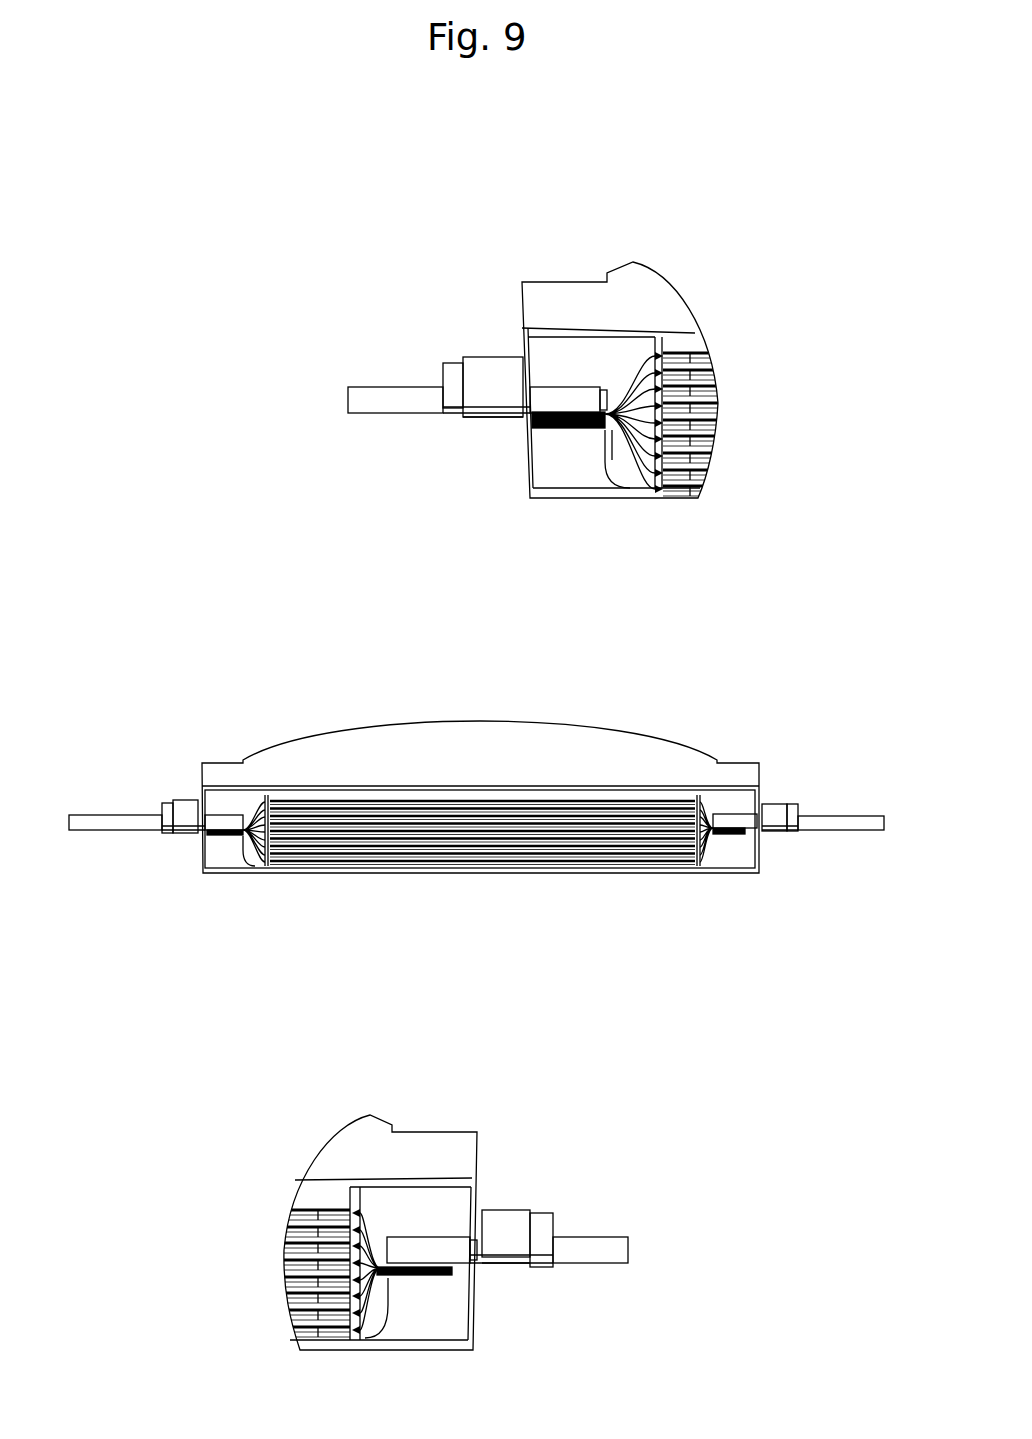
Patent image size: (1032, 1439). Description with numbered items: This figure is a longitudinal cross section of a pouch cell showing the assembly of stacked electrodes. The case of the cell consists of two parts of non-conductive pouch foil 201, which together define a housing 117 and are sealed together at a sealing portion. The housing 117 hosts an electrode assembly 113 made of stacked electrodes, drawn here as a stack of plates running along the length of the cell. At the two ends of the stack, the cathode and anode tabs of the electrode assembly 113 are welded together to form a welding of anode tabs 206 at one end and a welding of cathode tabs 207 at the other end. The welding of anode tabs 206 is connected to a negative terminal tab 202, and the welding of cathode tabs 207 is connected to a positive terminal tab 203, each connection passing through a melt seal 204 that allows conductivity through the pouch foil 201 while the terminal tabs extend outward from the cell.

The pouch foil 201 is at (418, 757).
The negative terminal tab 202 is at (845, 818).
The positive terminal tab 203 is at (413, 397).
The melt seal 204 is at (453, 372).
The welding of anode tabs 206 is at (730, 820).
The welding of cathode tabs 207 is at (570, 397).
The electrode assembly 113 is at (625, 833).
The housing 117 is at (578, 470).